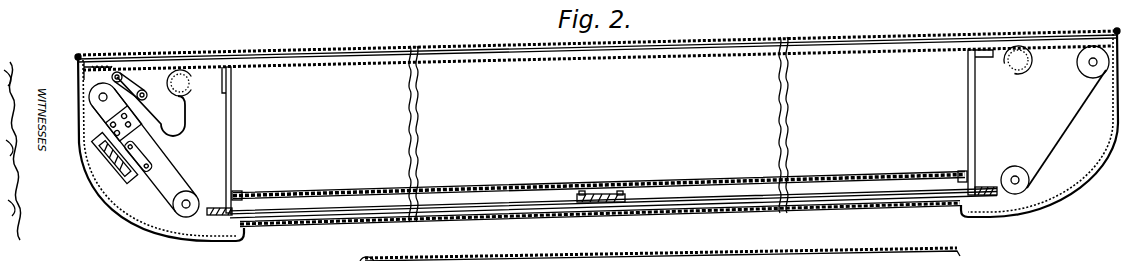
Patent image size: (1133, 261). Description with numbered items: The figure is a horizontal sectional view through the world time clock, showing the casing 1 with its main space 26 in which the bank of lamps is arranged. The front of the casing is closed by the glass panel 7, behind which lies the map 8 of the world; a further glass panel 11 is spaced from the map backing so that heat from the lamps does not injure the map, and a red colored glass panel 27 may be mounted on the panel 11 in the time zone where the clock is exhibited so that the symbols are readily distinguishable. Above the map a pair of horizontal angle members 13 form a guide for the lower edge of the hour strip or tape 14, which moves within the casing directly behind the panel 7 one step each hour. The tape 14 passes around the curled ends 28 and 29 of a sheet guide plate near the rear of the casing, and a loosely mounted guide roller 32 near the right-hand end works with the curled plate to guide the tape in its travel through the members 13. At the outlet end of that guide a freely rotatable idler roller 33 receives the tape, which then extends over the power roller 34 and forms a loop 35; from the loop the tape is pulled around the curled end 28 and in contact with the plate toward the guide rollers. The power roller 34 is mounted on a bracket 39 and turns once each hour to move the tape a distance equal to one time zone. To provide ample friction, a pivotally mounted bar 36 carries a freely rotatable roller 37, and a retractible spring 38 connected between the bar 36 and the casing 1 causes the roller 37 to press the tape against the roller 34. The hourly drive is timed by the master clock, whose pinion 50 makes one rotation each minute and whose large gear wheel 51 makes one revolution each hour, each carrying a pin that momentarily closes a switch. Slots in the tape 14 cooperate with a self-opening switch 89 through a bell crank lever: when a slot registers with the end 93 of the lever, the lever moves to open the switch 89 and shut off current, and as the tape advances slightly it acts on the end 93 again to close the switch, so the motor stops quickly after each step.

The casing 1 is at (133, 222).
The glass panel 7 is at (315, 226).
The map 8 is at (488, 213).
The glass panel 11 is at (716, 183).
The angle members 13 is at (212, 208).
The hour strip or tape 14 is at (186, 119).
The main space 26 is at (722, 68).
The colored glass panel 27 is at (604, 193).
The curled end 28 is at (190, 93).
The curled end 29 is at (1012, 72).
The guide roller 32 is at (1020, 170).
The idler roller 33 is at (174, 209).
The power roller 34 is at (89, 98).
The loop 35 is at (179, 133).
The pivotally mounted bar 36 is at (142, 90).
The roller 37 is at (119, 71).
The retractible spring 38 is at (97, 66).
The bracket 39 is at (128, 124).
The pinion 50 is at (676, 58).
The large gear wheel 51 is at (1089, 67).
The switch 89 is at (98, 145).
The end of the lever 93 is at (148, 176).